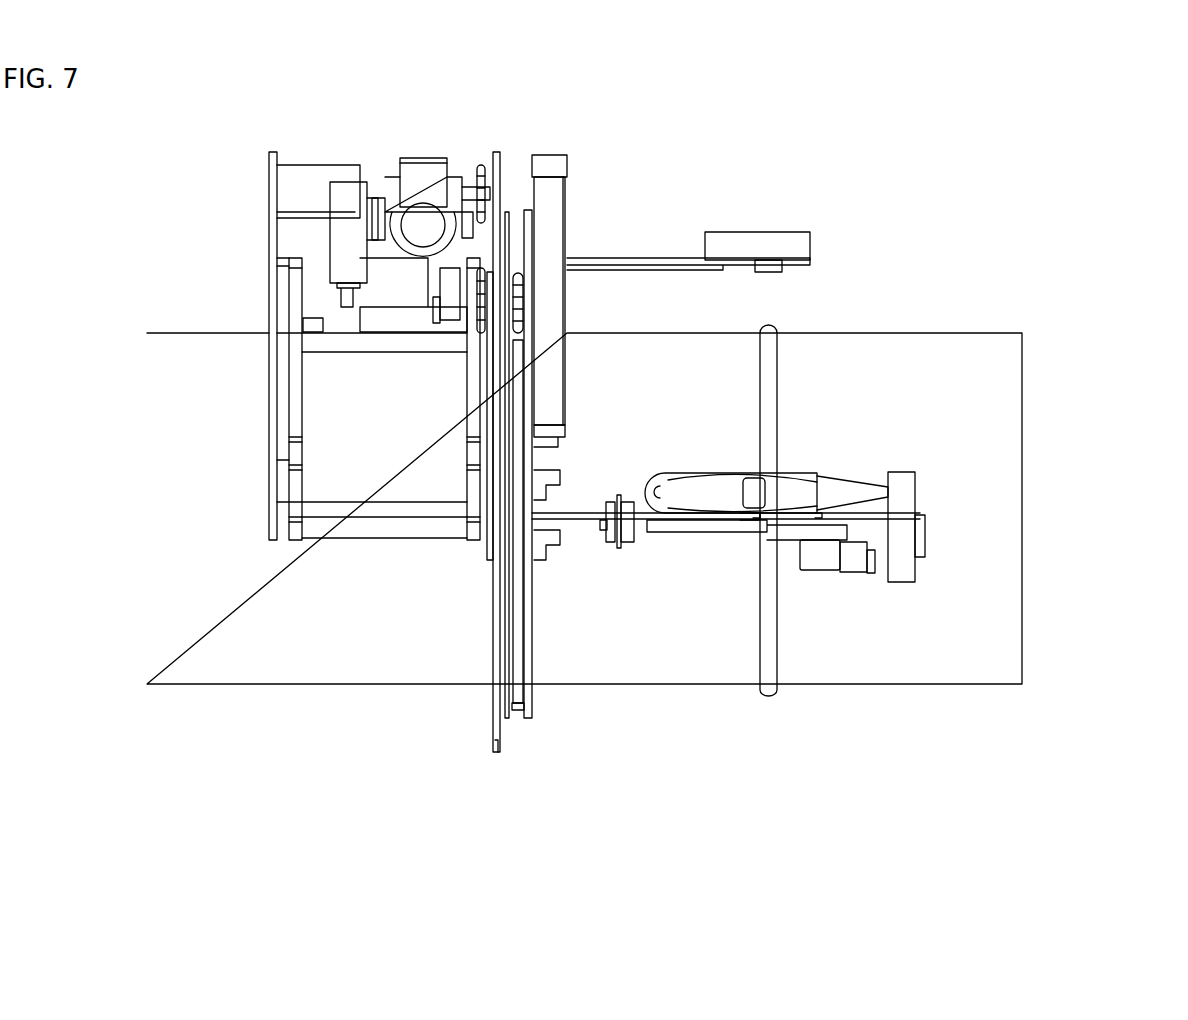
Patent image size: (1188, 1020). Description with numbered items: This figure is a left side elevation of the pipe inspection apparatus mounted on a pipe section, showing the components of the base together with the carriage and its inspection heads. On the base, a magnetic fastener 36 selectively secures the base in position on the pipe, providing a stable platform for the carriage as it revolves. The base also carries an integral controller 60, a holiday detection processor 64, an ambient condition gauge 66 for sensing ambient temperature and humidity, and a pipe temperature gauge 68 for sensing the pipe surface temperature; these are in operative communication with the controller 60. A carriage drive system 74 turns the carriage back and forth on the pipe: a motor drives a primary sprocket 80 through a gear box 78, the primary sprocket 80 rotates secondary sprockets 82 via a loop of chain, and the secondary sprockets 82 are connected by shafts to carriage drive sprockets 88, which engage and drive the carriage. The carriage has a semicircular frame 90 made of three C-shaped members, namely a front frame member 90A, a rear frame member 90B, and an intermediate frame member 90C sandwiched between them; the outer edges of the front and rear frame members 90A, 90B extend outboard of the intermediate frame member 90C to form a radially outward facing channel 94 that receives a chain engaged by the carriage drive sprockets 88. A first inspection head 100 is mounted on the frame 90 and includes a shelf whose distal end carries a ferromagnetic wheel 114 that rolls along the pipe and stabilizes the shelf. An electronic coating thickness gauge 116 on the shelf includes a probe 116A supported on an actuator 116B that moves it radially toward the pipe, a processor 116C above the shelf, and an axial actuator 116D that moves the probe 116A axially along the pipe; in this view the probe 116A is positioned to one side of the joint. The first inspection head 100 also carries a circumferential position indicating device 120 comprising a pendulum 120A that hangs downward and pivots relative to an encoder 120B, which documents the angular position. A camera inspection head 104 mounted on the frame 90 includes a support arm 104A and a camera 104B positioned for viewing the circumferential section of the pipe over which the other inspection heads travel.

The magnetic fastener 36 is at (316, 548).
The controller 60 is at (345, 243).
The holiday detection processor 64 is at (302, 164).
The ambient condition gauge 66 is at (372, 200).
The pipe temperature gauge 68 is at (430, 162).
The carriage drive system 74 is at (514, 95).
The gear box 78 is at (422, 158).
The primary sprocket 80 is at (480, 165).
The secondary sprockets 82 is at (440, 322).
The carriage drive sprockets 88 is at (523, 312).
The semicircular frame 90 is at (538, 742).
The front frame member 90A is at (528, 625).
The rear frame member 90B is at (508, 652).
The intermediate frame member 90C is at (516, 690).
The radially outward facing channel 94 is at (515, 710).
The first inspection head 100 is at (887, 660).
The camera inspection head 104 is at (736, 160).
The support arm 104A is at (643, 258).
The camera 104B is at (766, 232).
The ferromagnetic wheel 114 is at (926, 540).
The electronic coating thickness gauge 116 is at (834, 432).
The probe 116A is at (873, 560).
The actuator 116B is at (856, 572).
The processor 116C is at (708, 470).
The axial actuator 116D is at (736, 533).
The circumferential position indicating device 120 is at (620, 592).
The pendulum 120A is at (606, 538).
The encoder 120B is at (636, 545).